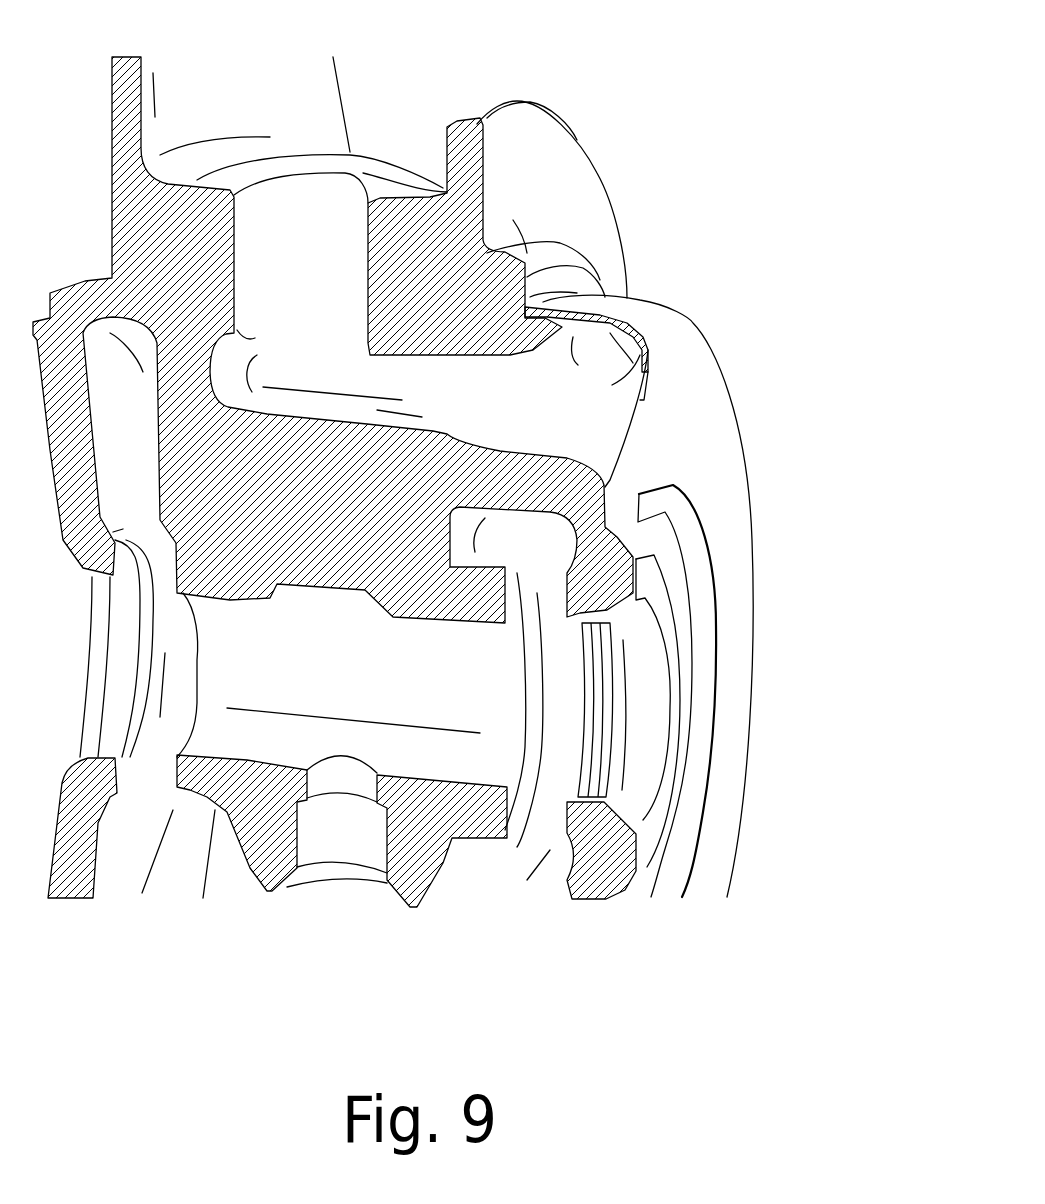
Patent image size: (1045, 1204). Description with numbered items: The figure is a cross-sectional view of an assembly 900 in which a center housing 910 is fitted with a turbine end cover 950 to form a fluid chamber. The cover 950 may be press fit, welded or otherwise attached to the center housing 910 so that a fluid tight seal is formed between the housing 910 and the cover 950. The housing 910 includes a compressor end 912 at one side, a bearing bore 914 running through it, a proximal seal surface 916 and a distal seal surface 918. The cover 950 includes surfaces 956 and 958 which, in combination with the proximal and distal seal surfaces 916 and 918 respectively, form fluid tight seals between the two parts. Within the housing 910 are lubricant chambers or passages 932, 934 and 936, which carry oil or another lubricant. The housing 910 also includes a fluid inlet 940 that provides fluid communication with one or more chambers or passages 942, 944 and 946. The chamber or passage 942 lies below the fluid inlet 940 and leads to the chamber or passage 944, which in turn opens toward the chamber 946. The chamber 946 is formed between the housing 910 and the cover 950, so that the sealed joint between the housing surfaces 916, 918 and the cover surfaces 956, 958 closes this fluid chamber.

The assembly 900 is at (522, 500).
The center housing 910 is at (533, 105).
The compressor end 912 is at (74, 577).
The bearing bore 914 is at (253, 603).
The proximal seal surface 916 is at (598, 280).
The distal seal surface 918 is at (716, 592).
The lubricant chamber or passage 932 is at (350, 949).
The lubricant chamber or passage 934 is at (139, 425).
The lubricant chamber or passage 936 is at (547, 557).
The fluid inlet 940 is at (362, 167).
The chamber or passage 942 is at (321, 277).
The chamber or passage 944 is at (367, 384).
The chamber 946 is at (597, 409).
The turbine end cover 950 is at (710, 360).
The surface 956 is at (588, 287).
The surface 958 is at (718, 604).